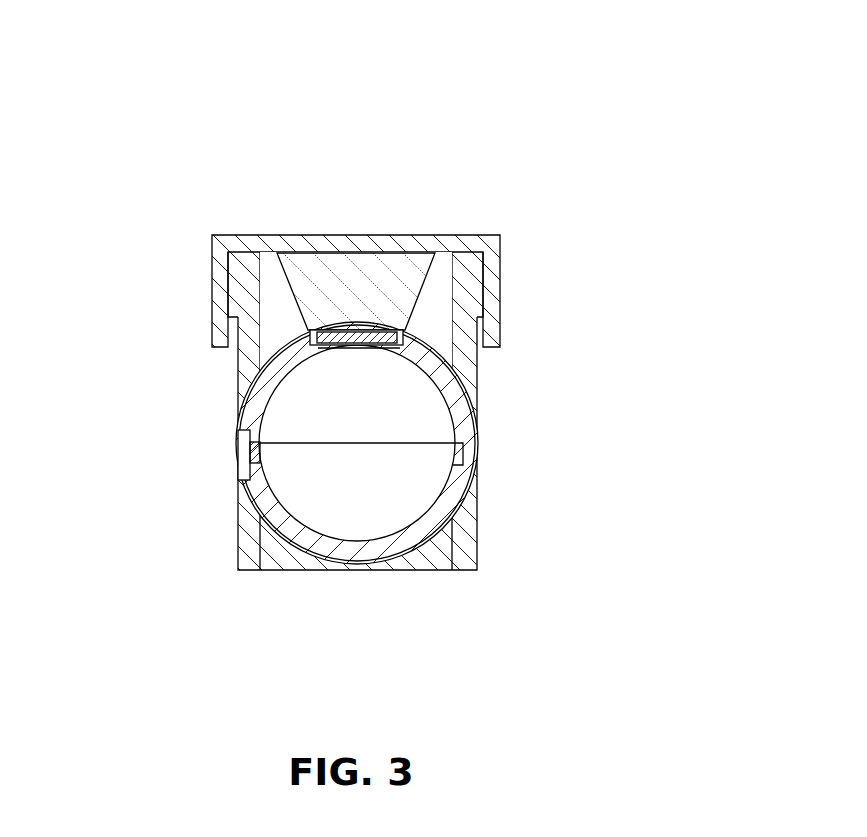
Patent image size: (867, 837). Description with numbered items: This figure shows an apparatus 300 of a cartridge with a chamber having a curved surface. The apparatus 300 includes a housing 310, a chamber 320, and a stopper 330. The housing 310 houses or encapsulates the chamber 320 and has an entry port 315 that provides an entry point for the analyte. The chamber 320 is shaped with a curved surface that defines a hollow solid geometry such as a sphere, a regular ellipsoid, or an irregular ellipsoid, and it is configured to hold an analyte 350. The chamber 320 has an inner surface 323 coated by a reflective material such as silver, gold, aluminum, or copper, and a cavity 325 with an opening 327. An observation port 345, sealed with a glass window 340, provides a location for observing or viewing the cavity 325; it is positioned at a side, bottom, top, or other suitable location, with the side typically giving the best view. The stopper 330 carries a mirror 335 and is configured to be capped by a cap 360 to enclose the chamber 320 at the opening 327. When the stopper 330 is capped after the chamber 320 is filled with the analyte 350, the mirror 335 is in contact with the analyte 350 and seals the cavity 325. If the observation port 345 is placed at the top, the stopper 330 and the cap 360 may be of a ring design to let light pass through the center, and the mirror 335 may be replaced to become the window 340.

The apparatus 300 is at (580, 70).
The housing 310 is at (464, 301).
The entry port 315 is at (455, 276).
The chamber 320 is at (413, 453).
The inner surface 323 is at (292, 506).
The cavity 325 is at (393, 510).
The opening 327 is at (386, 359).
The stopper 330 is at (303, 288).
The mirror 335 is at (352, 337).
The glass window 340 is at (235, 479).
The observation port 345 is at (253, 455).
The analyte 350 is at (361, 431).
The cap 360 is at (218, 258).